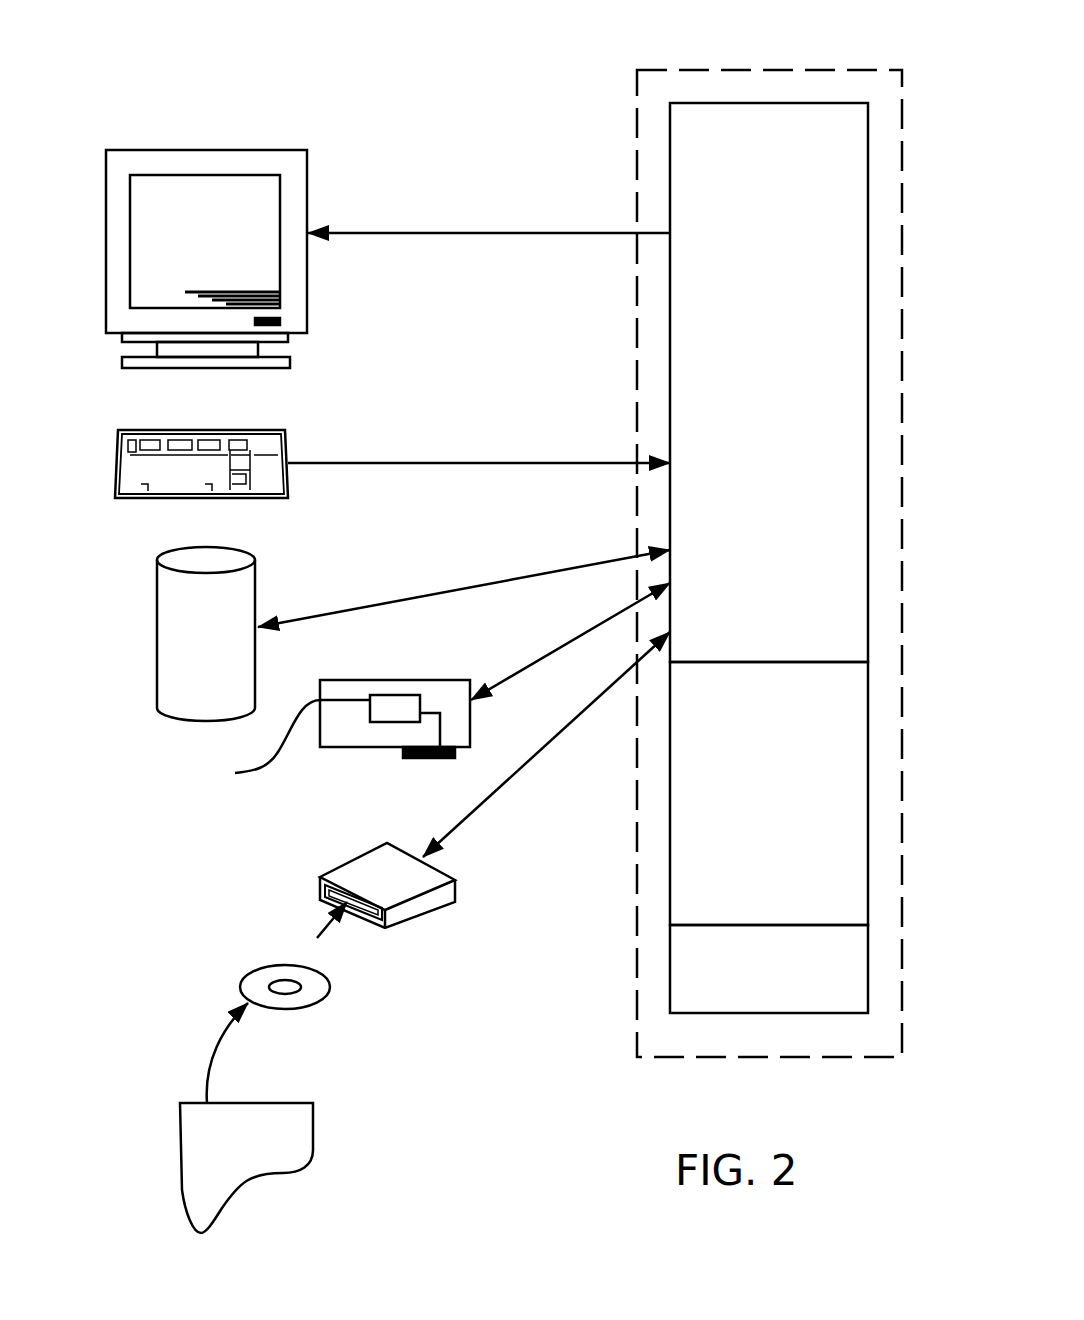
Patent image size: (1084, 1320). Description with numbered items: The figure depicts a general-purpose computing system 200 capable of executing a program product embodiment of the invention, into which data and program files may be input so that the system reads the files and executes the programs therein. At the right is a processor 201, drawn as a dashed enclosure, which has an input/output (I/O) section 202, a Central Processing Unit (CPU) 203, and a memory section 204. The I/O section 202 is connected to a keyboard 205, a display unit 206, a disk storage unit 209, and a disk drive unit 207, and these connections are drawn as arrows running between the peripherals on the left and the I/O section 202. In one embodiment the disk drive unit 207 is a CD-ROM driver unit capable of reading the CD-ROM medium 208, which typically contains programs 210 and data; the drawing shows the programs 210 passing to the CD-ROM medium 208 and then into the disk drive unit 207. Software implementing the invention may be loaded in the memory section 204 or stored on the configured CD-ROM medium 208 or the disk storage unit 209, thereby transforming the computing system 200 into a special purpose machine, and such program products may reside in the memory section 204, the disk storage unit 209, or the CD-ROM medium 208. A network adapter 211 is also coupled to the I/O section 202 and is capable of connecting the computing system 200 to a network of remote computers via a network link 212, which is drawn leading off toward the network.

The general-purpose computing system 200 is at (250, 56).
The processor 201 is at (637, 137).
The input/output (I/O) section 202 is at (769, 382).
The Central Processing Unit (CPU) 203 is at (769, 793).
The memory section 204 is at (769, 969).
The keyboard 205 is at (160, 430).
The display unit 206 is at (173, 148).
The disk drive unit 207 is at (370, 878).
The CD-ROM medium 208 is at (253, 967).
The disk storage unit 209 is at (160, 556).
The programs 210 is at (317, 1123).
The network adapter 211 is at (370, 747).
The network link 212 is at (258, 776).